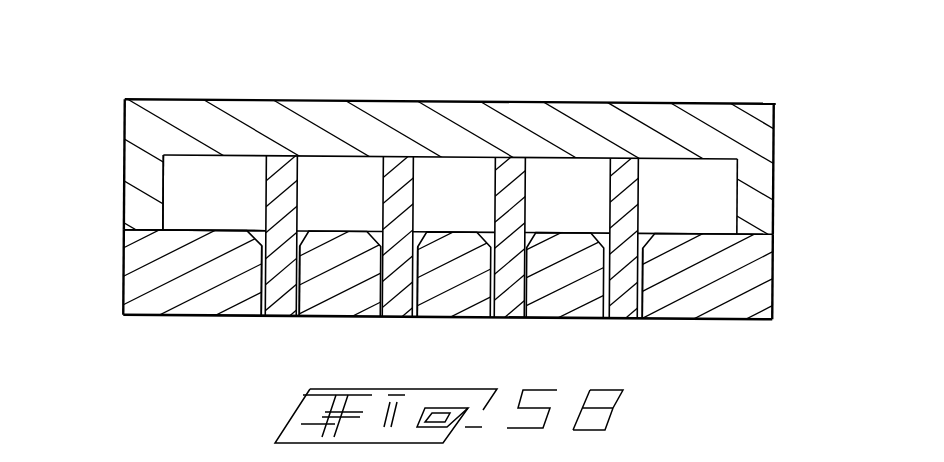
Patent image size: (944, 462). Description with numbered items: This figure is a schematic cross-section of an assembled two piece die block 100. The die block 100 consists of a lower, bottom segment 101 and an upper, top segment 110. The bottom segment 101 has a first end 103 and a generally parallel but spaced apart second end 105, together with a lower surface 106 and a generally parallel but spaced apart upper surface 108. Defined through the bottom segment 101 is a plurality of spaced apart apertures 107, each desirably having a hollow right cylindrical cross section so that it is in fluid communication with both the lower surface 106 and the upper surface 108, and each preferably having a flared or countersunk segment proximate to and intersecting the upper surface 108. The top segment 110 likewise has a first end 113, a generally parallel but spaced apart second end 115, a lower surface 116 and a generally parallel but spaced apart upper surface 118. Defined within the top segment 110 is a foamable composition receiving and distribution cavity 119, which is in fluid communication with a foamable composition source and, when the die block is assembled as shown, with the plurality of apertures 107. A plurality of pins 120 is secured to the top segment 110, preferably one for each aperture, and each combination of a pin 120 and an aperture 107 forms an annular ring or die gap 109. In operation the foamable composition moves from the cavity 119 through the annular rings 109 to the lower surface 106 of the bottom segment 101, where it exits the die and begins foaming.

The die block 100 is at (679, 77).
The bottom segment 101 is at (707, 292).
The first end 103 is at (774, 262).
The second end 105 is at (124, 288).
The lower surface 106 is at (207, 317).
The apertures 107 is at (377, 295).
The upper surface 108 is at (124, 232).
The annular ring 109 is at (301, 306).
The top segment 110 is at (730, 105).
The first end 113 is at (776, 153).
The second end 115 is at (110, 120).
The lower surface 116 is at (150, 230).
The upper surface 118 is at (189, 100).
The foamable composition receiving and distribution cavity 119 is at (216, 175).
The pins 120 is at (618, 292).